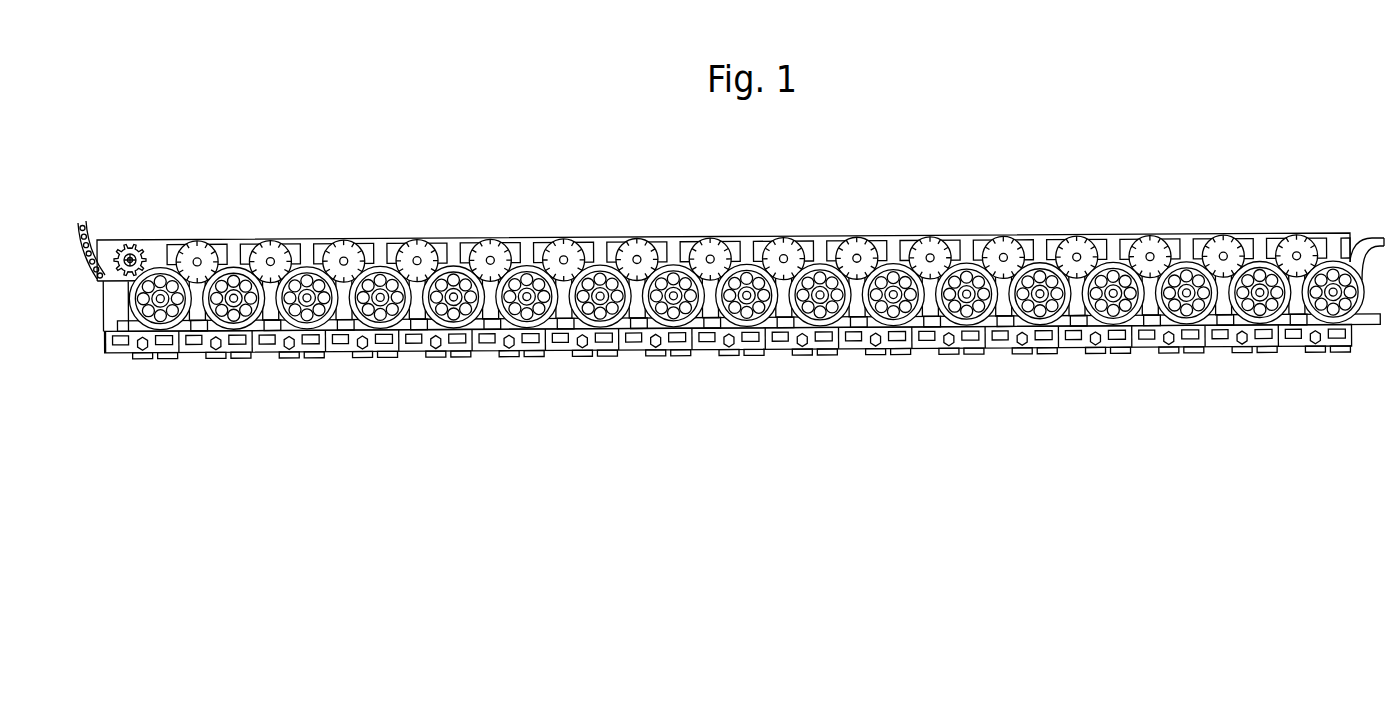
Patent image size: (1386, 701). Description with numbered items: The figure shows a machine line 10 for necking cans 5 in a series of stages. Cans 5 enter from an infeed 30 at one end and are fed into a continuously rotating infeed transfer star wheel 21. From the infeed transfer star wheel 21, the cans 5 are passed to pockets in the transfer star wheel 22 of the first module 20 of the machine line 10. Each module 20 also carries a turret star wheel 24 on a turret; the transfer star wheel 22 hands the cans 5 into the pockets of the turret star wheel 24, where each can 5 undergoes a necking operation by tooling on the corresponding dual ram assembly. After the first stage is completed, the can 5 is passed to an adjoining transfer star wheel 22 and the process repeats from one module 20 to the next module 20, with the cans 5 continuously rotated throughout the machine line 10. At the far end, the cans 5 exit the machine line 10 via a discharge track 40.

The machine line 10 is at (371, 180).
The module 20 is at (382, 346).
The infeed transfer star wheel 21 is at (132, 245).
The transfer star wheel 22 is at (596, 338).
The turret star wheel 24 is at (1227, 242).
The infeed 30 is at (83, 221).
The can 5 is at (95, 268).
The discharge track 40 is at (1375, 233).